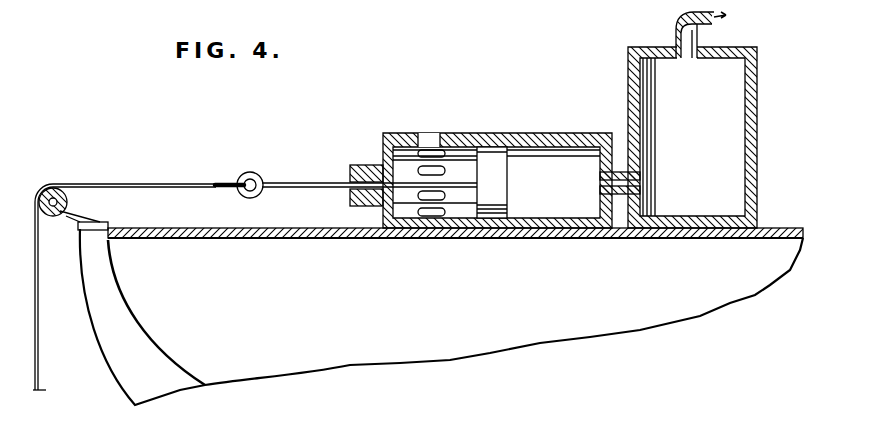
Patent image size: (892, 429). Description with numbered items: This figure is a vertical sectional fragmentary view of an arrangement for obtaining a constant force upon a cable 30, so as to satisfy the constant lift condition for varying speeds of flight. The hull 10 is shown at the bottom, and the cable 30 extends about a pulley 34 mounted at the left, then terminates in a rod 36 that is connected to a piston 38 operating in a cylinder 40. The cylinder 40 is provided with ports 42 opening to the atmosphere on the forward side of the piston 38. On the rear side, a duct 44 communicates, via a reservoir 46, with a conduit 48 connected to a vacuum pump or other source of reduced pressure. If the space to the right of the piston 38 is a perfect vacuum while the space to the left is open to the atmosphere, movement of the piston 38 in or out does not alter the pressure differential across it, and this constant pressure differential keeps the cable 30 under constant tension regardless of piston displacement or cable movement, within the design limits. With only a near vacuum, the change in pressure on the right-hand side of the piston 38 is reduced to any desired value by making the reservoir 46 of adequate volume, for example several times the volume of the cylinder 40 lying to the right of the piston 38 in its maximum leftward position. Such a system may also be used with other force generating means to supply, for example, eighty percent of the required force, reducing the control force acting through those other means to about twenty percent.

The hull 10 is at (165, 345).
The cable 30 is at (42, 366).
The pulley 34 is at (67, 200).
The rod 36 is at (312, 178).
The piston 38 is at (508, 193).
The cylinder 40 is at (566, 133).
The ports 42 is at (436, 131).
The duct 44 is at (640, 176).
The reservoir 46 is at (740, 134).
The conduit 48 is at (674, 26).